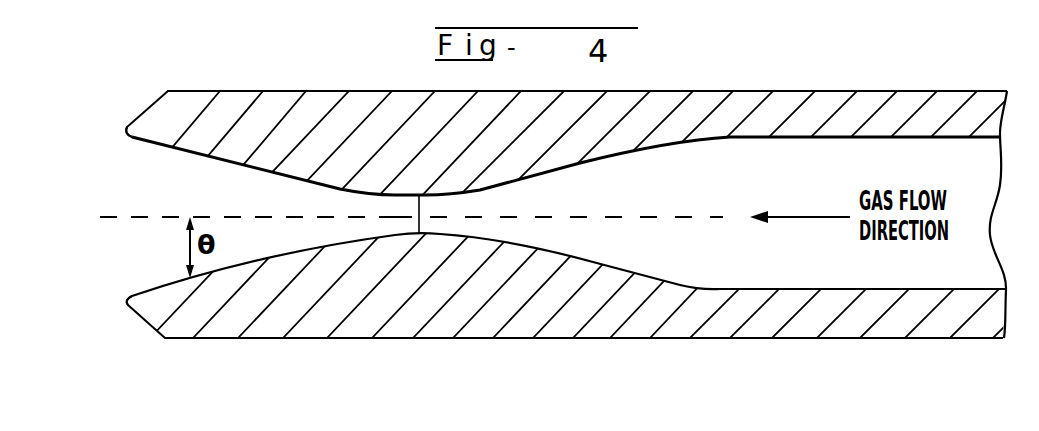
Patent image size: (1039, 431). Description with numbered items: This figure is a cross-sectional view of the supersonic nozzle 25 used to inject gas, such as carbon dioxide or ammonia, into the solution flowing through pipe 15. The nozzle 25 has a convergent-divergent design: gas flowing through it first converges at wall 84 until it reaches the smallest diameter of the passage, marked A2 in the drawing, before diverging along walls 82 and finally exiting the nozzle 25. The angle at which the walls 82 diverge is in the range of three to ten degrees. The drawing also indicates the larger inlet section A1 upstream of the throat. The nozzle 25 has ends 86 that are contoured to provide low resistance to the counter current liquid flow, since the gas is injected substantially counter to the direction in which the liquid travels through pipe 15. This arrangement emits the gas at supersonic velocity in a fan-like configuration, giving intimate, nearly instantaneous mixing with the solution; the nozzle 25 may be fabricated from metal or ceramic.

The nozzle 25 is at (749, 82).
The pipe 15 is at (557, 320).
The diverging walls 82 is at (260, 260).
The converging wall 84 is at (598, 250).
The contoured ends 86 is at (126, 131).
The inlet area / centerline A1 is at (404, 207).
The throat area A2 is at (442, 214).